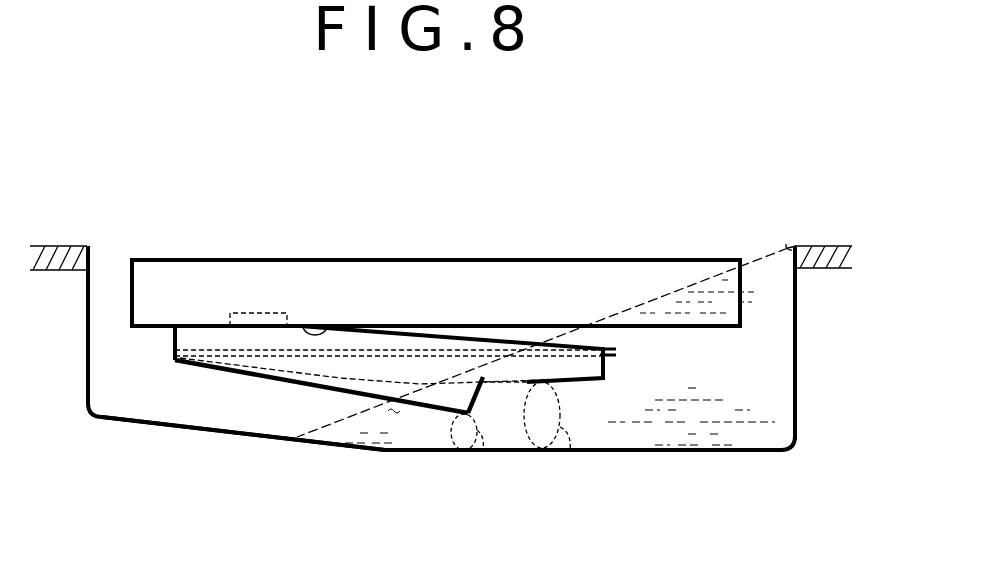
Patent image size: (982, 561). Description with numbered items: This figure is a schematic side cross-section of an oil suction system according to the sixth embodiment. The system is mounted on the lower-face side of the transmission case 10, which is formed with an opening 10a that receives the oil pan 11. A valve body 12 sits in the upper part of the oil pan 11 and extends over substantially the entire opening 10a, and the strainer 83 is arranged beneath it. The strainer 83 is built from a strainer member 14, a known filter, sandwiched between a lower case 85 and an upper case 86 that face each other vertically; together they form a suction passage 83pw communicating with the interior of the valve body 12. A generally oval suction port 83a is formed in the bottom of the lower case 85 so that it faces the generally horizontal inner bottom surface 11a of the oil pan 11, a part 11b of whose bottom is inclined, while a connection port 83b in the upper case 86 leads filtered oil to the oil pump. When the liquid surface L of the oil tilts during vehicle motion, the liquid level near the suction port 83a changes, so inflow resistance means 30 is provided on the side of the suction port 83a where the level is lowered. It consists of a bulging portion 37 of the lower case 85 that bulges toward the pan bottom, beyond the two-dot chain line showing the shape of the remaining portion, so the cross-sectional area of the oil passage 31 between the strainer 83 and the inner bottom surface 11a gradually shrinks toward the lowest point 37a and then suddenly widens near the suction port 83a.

The transmission case 10 is at (60, 246).
The opening 10a is at (788, 248).
The oil pan 11 is at (481, 449).
The inner bottom surface 11a is at (612, 446).
The inclined bottom part 11b is at (230, 428).
The valve body 12 is at (417, 260).
The strainer member 14 is at (401, 350).
The inflow resistance means 30 is at (329, 450).
The oil passage 31 is at (483, 445).
The bulging portion 37 is at (418, 408).
The lowest point 37a is at (463, 416).
The strainer 83 is at (453, 388).
The suction port 83a is at (503, 382).
The connection port 83b is at (252, 312).
The suction passage 83pw is at (327, 325).
The lower case 85 is at (228, 362).
The upper case 86 is at (172, 347).
The liquid surface L is at (702, 278).